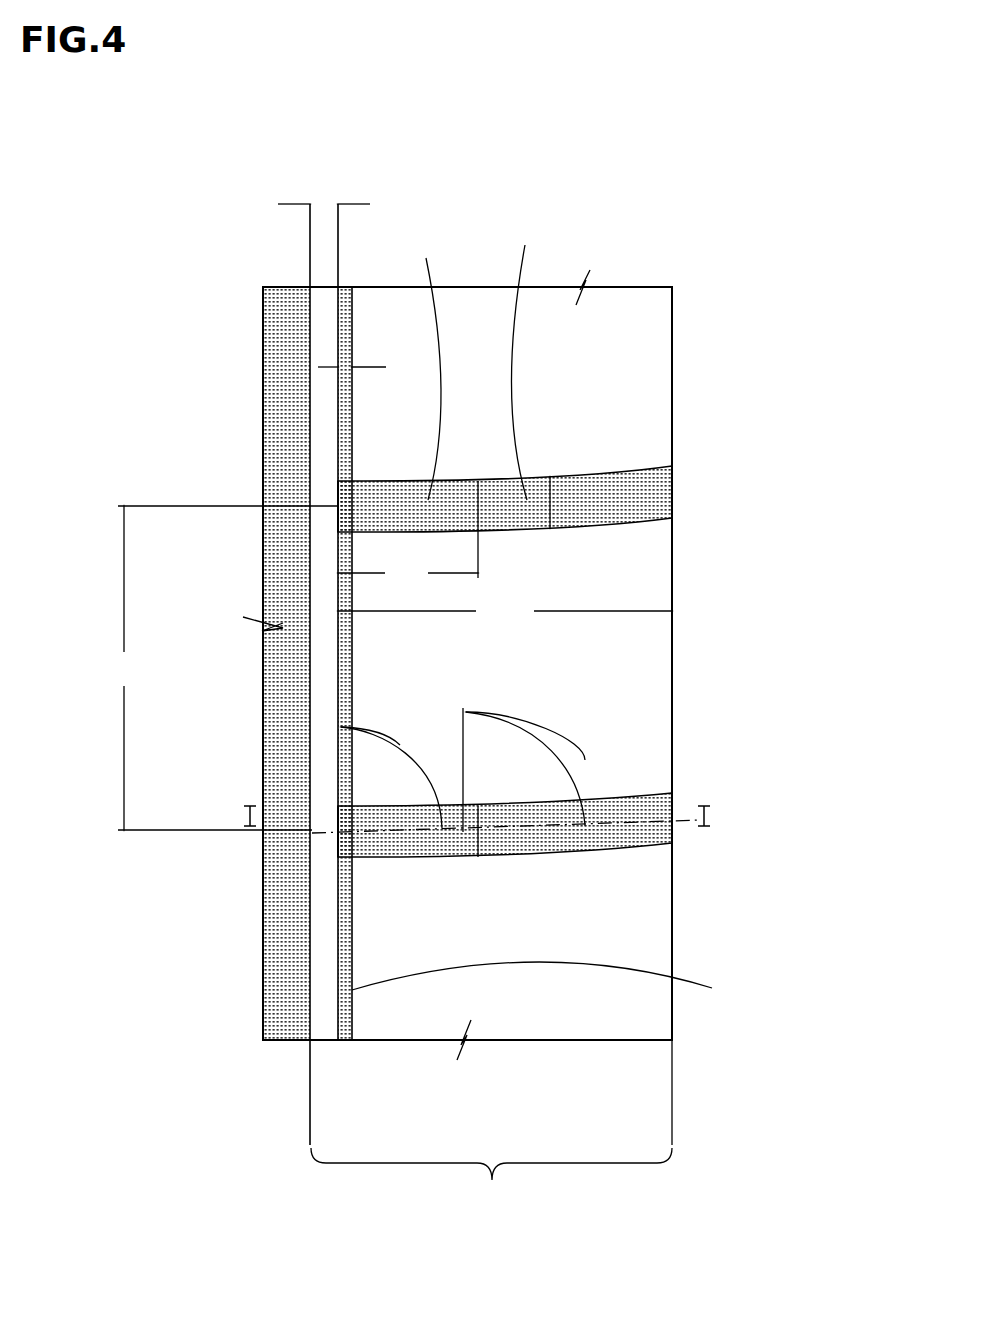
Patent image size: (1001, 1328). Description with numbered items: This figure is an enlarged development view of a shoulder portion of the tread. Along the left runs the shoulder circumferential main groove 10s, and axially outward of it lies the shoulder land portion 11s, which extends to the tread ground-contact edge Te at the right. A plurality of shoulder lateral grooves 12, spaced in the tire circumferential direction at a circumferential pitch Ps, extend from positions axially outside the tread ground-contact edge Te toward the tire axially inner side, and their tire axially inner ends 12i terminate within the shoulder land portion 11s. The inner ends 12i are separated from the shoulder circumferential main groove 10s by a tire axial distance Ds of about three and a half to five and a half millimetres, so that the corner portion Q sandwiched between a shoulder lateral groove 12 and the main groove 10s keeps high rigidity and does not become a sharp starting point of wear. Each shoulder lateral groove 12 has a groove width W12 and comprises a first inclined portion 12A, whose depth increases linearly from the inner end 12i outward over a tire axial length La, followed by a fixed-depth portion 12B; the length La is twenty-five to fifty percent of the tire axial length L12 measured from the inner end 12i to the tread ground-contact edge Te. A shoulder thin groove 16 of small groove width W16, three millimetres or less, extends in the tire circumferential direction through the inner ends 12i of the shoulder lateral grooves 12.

The shoulder circumferential main groove 10s is at (290, 1006).
The shoulder land portion 11s is at (491, 1129).
The shoulder lateral groove 12 is at (600, 532).
The first inclined portion 12A is at (428, 366).
The fixed-depth portion 12B is at (530, 359).
The tire axially inner end 12i is at (333, 520).
The shoulder thin groove 16 is at (551, 983).
The tread ground-contact edge Te is at (673, 332).
The tire axial distance Ds is at (324, 188).
The groove width of shoulder thin groove W16 is at (367, 351).
The groove width of shoulder lateral groove W12 is at (555, 493).
The tire axial length of first inclined portion La is at (408, 560).
The tire axial length of shoulder lateral groove L12 is at (505, 612).
The circumferential pitch of shoulder lateral grooves Ps is at (223, 668).
The corner portion Q is at (370, 467).